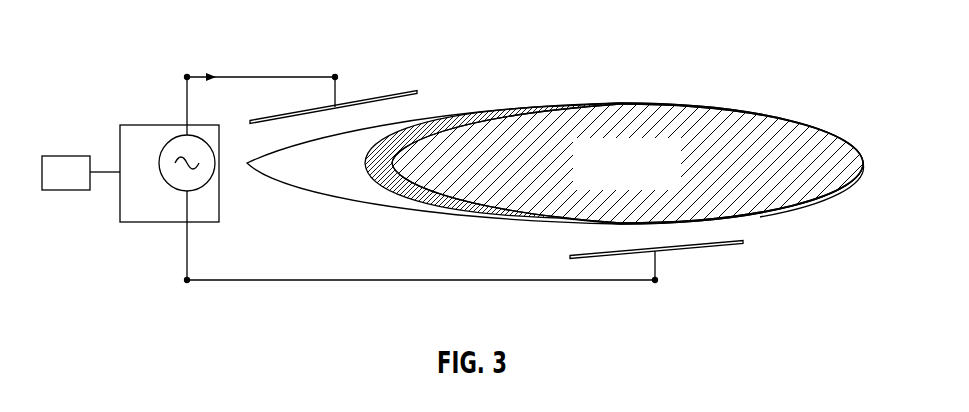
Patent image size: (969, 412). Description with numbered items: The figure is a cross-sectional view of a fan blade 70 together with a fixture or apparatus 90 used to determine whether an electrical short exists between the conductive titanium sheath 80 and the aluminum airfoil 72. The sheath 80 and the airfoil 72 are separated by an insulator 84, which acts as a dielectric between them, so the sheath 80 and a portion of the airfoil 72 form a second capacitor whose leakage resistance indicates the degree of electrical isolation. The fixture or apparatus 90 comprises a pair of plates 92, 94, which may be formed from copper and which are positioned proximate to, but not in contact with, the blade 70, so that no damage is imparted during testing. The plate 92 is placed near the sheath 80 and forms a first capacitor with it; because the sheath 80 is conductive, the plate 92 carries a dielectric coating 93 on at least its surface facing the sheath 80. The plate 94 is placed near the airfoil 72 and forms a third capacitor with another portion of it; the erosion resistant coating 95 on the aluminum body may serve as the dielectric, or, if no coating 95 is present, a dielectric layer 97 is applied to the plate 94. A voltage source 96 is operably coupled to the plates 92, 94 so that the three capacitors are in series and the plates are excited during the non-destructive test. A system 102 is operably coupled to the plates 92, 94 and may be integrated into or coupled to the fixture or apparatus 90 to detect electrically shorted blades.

The fan blade 70 is at (552, 159).
The airfoil 72 is at (680, 104).
The sheath 80 is at (363, 203).
The insulator 84 is at (407, 198).
The fixture or apparatus 90 is at (454, 149).
The plate 92 is at (334, 89).
The dielectric coating 93 is at (402, 91).
The plate 94 is at (664, 254).
The coating 95 is at (805, 201).
The voltage source 96 is at (175, 190).
The dielectric layer 97 is at (723, 246).
The system 102 is at (62, 155).